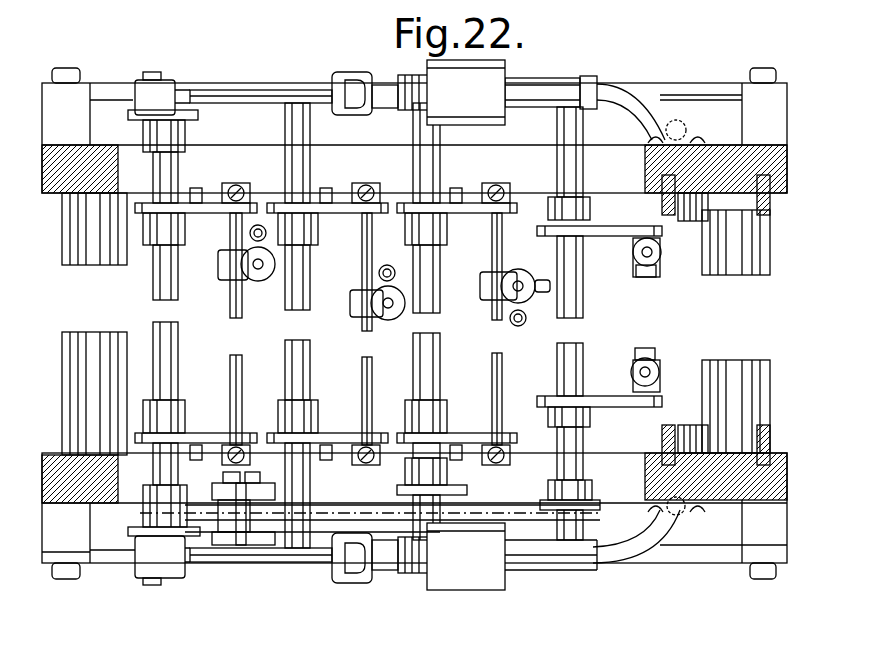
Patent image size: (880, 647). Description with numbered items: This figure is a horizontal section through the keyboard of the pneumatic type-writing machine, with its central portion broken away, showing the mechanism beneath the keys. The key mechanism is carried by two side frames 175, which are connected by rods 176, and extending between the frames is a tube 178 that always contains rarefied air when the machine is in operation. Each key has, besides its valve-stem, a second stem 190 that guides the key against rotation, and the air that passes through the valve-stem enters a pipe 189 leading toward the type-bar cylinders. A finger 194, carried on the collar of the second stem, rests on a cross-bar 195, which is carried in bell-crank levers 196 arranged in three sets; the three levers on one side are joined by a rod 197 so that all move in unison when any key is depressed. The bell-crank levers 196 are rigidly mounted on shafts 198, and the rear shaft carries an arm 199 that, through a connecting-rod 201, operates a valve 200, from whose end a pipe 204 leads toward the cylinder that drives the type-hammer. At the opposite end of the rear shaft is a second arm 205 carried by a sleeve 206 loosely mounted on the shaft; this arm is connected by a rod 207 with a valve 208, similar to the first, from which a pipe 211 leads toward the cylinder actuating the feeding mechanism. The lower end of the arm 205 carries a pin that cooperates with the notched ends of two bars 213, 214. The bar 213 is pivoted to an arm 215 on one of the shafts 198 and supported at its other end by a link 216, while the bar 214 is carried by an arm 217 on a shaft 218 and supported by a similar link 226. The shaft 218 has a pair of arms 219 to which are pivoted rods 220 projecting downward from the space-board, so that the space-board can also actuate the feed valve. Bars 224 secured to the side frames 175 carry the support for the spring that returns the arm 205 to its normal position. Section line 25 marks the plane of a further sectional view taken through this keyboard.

The pipe 25 is at (155, 508).
The frame 175 is at (414, 324).
The rod 176 is at (78, 356).
The tube 178 is at (755, 202).
The pipe 189 is at (378, 274).
The second stem 190 is at (388, 310).
The finger 194 is at (230, 268).
The cross-bar 195 is at (240, 357).
The bell-crank lever 196 is at (211, 208).
The rod 197 is at (340, 203).
The shaft 198 is at (160, 282).
The arm 199 is at (168, 110).
The valve 200 is at (466, 92).
The connecting-rod 201 is at (255, 90).
The pipe 204 is at (638, 92).
The second arm 205 is at (168, 538).
The sleeve 206 is at (147, 520).
The rod 207 is at (240, 563).
The valve 208 is at (512, 556).
The pipe 211 is at (630, 553).
The bar 213 is at (353, 507).
The bar 214 is at (380, 523).
The arm 215 is at (463, 493).
The link 216 is at (240, 535).
The arm 217 is at (590, 503).
The shaft 218 is at (585, 355).
The arm 219 is at (622, 228).
The rod 220 is at (656, 358).
The bar 224 is at (707, 95).
The link 226 is at (257, 538).